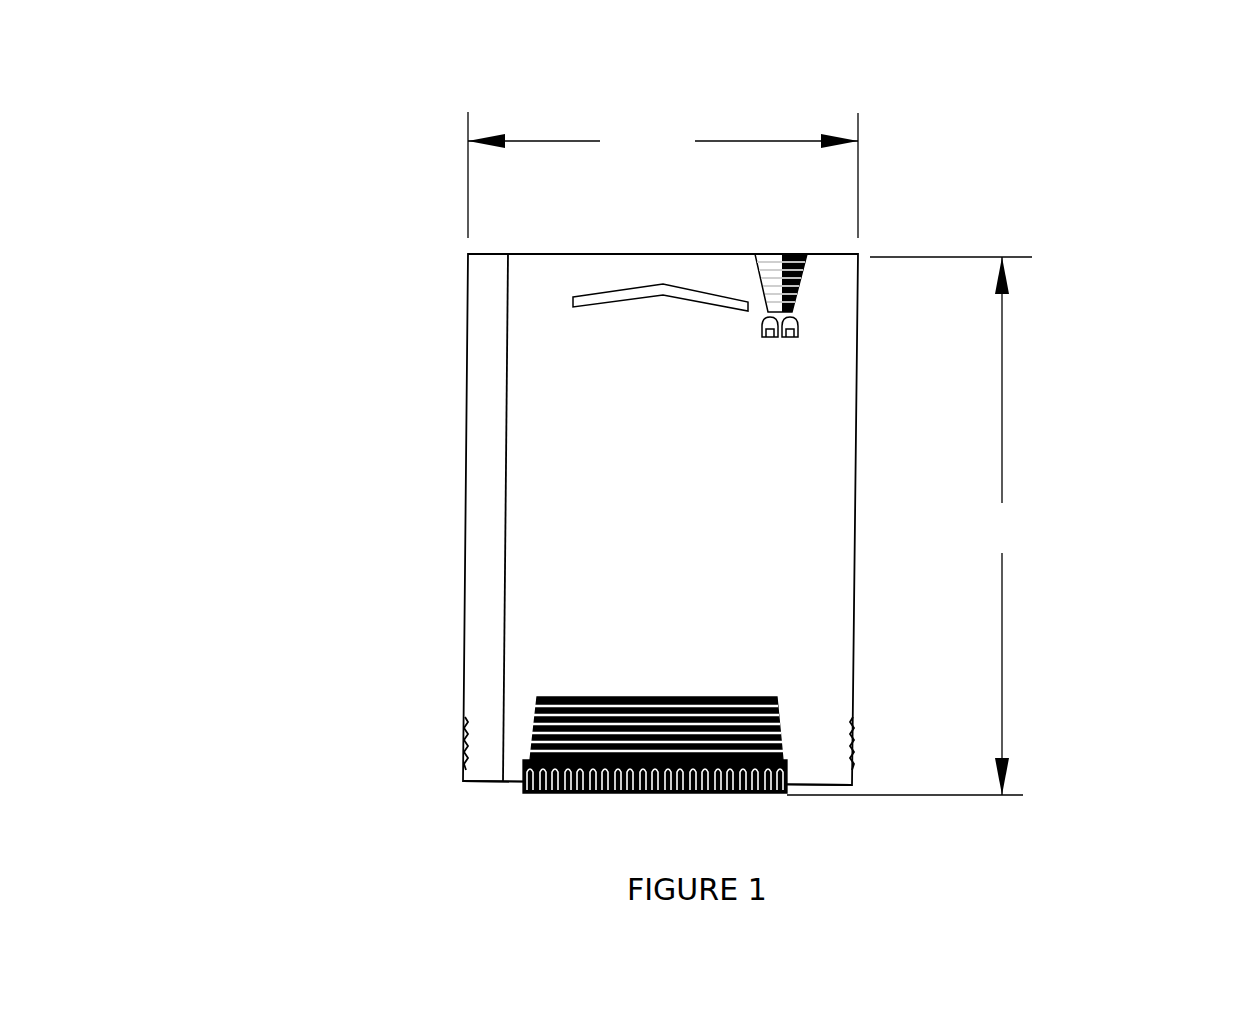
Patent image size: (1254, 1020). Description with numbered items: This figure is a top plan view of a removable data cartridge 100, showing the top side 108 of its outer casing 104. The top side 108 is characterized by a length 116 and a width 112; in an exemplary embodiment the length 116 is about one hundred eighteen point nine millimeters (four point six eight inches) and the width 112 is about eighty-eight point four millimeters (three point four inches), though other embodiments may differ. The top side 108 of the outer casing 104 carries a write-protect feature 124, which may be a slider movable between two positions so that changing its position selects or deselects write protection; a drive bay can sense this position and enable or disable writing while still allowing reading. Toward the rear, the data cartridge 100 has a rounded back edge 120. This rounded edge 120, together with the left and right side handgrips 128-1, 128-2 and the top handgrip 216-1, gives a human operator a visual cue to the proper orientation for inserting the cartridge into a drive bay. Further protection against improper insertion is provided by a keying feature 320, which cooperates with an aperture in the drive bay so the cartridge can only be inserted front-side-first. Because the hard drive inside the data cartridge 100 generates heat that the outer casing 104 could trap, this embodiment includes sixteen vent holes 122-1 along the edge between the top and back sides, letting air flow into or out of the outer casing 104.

The removable data cartridge 100 is at (345, 343).
The outer casing 104 is at (862, 252).
The top side 108 is at (698, 498).
The width 112 is at (540, 141).
The length 116 is at (1002, 450).
The rounded back edge 120 is at (508, 800).
The vent holes 122-1 is at (723, 795).
The write-protect feature 124 is at (775, 270).
The left side handgrip 128-1 is at (463, 750).
The right side handgrip 128-2 is at (850, 737).
The top handgrip 216-1 is at (780, 710).
The keying feature 320 is at (495, 518).